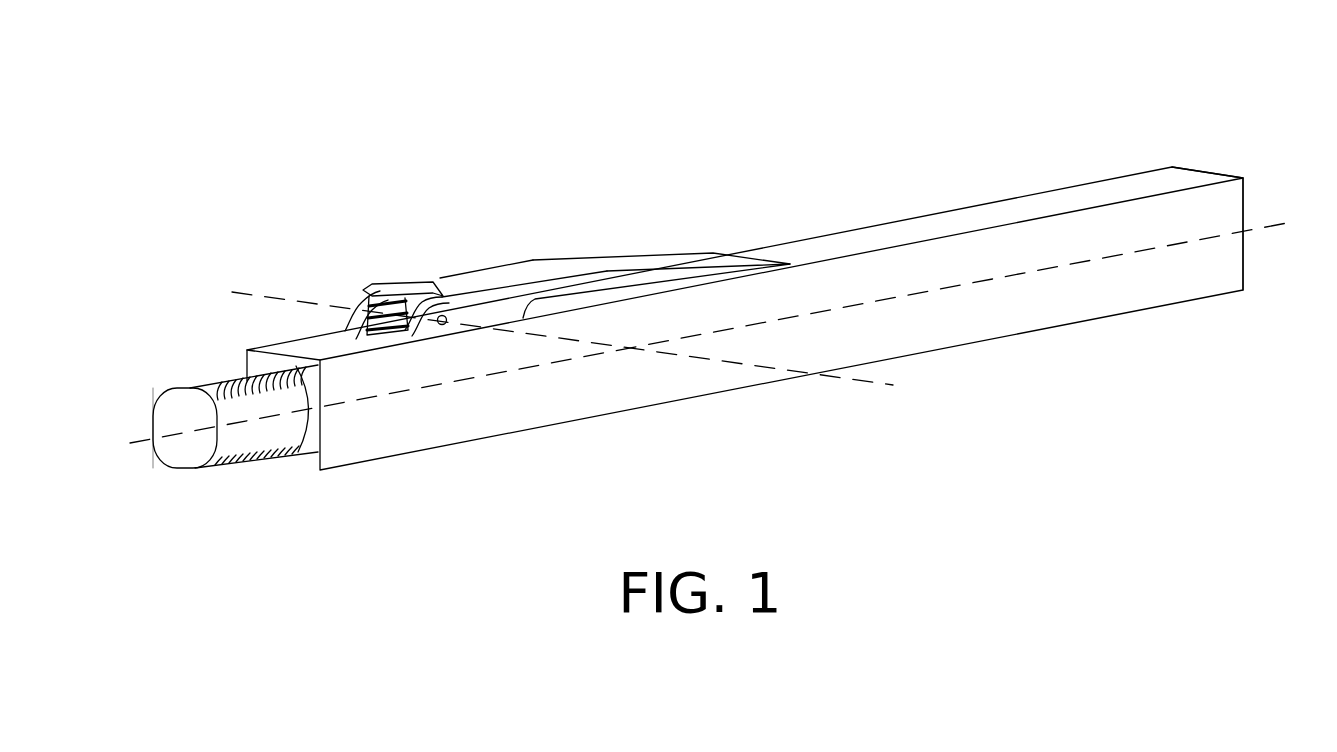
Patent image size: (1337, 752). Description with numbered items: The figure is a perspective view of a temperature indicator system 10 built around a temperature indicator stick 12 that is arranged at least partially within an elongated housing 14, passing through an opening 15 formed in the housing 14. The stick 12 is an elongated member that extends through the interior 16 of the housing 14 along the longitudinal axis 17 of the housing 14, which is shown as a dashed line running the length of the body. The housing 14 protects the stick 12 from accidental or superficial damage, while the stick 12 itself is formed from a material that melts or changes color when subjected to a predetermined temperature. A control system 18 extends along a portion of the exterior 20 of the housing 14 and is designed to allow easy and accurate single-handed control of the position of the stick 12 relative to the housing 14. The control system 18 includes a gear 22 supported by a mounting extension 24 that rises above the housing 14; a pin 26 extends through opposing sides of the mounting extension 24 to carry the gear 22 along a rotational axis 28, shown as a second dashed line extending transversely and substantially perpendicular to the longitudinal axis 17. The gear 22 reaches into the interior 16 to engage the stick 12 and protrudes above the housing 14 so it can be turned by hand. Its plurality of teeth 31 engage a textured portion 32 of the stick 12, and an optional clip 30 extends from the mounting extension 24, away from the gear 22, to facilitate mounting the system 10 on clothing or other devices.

The temperature indicator system 10 is at (852, 108).
The temperature indicator stick 12 is at (186, 455).
The housing 14 is at (975, 212).
The opening 15 is at (258, 454).
The interior 16 is at (264, 365).
The longitudinal axis 17 is at (1280, 226).
The control system 18 is at (438, 235).
The exterior 20 is at (1194, 155).
The gear 22 is at (378, 323).
The mounting extension 24 is at (475, 262).
The pin 26 is at (442, 325).
The rotational axis 28 is at (856, 381).
The clip 30 is at (657, 262).
The teeth 31 is at (393, 287).
The textured portion 32 is at (204, 345).